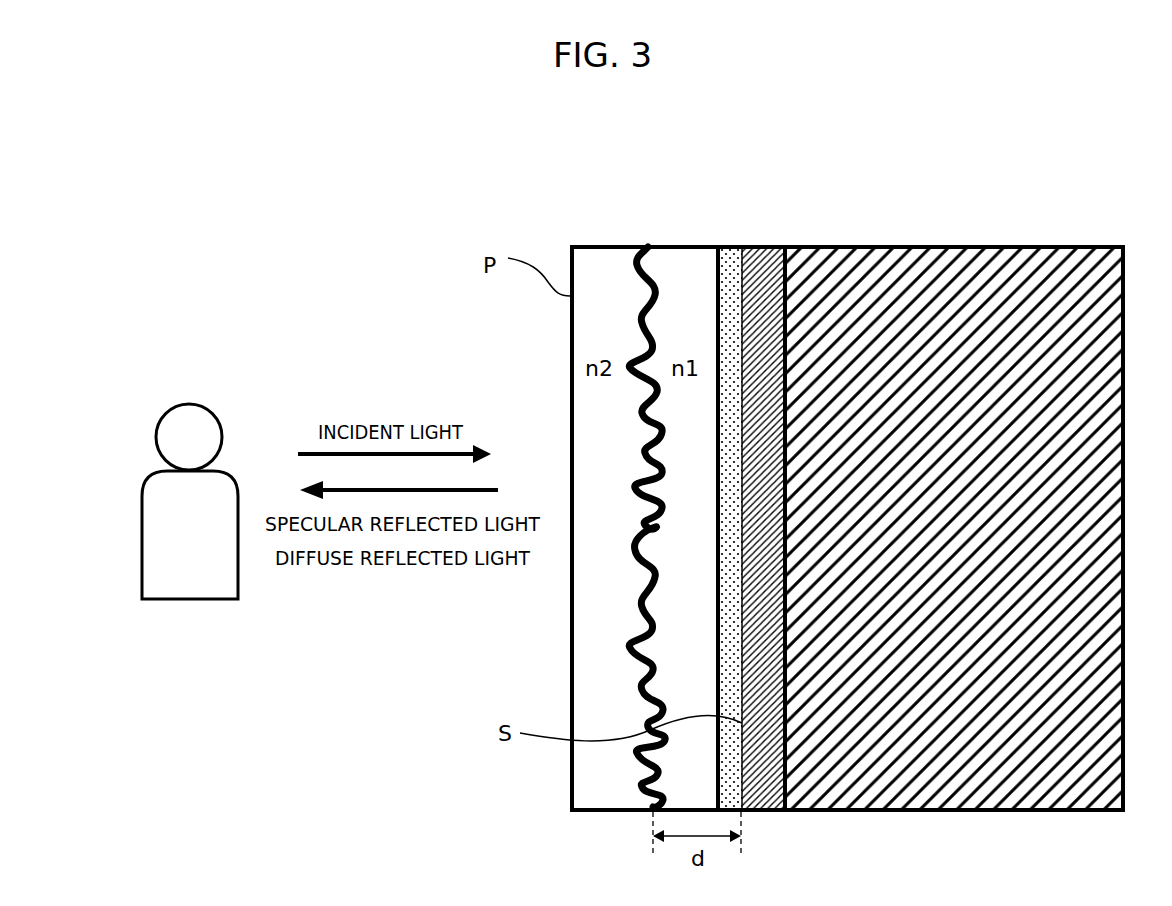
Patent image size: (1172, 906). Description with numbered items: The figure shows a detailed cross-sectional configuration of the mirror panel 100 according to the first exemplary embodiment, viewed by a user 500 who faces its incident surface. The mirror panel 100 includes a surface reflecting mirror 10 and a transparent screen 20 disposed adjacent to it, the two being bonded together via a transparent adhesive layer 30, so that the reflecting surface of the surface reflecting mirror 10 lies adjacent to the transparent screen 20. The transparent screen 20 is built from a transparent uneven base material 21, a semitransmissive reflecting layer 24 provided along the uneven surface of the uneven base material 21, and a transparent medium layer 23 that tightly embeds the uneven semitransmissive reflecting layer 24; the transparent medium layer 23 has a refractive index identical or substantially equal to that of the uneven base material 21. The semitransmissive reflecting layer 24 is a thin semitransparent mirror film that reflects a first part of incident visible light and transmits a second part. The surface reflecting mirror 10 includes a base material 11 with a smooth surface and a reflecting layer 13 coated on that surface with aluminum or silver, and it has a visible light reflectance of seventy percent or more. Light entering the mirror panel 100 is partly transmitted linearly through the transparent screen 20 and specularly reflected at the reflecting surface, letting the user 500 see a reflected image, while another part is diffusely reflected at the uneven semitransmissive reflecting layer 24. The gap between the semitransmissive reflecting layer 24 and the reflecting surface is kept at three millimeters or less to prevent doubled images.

The surface reflecting mirror 10 is at (932, 465).
The base material 11 is at (777, 176).
The reflecting layer 13 is at (764, 247).
The transparent screen 20 is at (647, 465).
The uneven base material 21 is at (593, 247).
The transparent medium layer 23 is at (701, 490).
The semitransmissive reflecting layer 24 is at (653, 247).
The transparent adhesive layer 30 is at (730, 247).
The mirror panel 100 is at (813, 832).
The user 500 is at (142, 518).